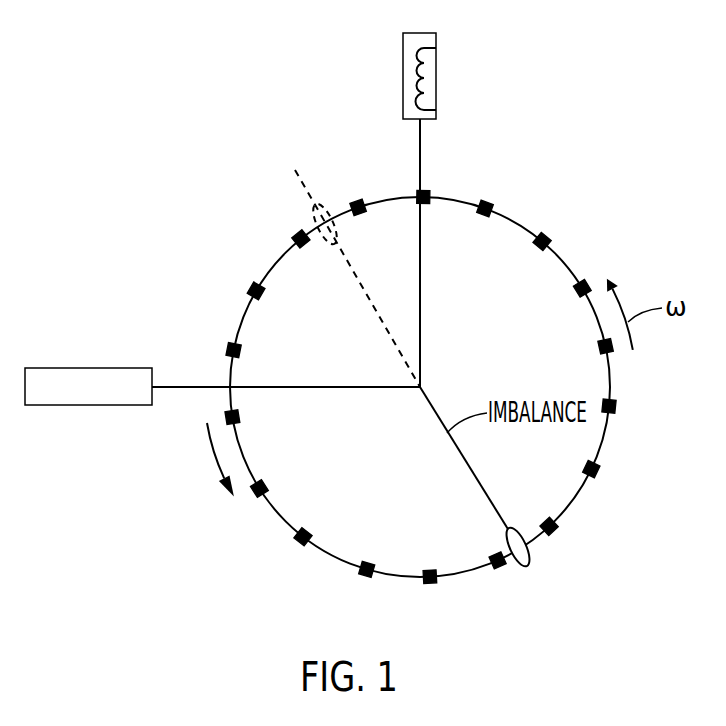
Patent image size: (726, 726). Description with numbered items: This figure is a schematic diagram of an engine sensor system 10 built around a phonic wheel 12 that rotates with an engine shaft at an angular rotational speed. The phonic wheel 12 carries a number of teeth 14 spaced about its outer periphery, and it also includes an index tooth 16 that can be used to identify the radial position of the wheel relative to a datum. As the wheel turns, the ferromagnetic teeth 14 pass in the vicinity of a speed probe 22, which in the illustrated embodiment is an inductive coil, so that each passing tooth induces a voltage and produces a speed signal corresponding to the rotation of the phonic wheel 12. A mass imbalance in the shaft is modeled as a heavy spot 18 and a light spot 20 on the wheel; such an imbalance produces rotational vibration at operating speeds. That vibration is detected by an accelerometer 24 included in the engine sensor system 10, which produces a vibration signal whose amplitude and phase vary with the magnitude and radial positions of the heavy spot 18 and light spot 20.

The engine sensor system 10 is at (168, 166).
The phonic wheel 12 is at (570, 265).
The teeth 14 is at (548, 237).
The index tooth 16 is at (488, 203).
The heavy spot 18 is at (531, 550).
The light spot 20 is at (352, 262).
The speed probe 22 is at (437, 82).
The accelerometer 24 is at (85, 367).